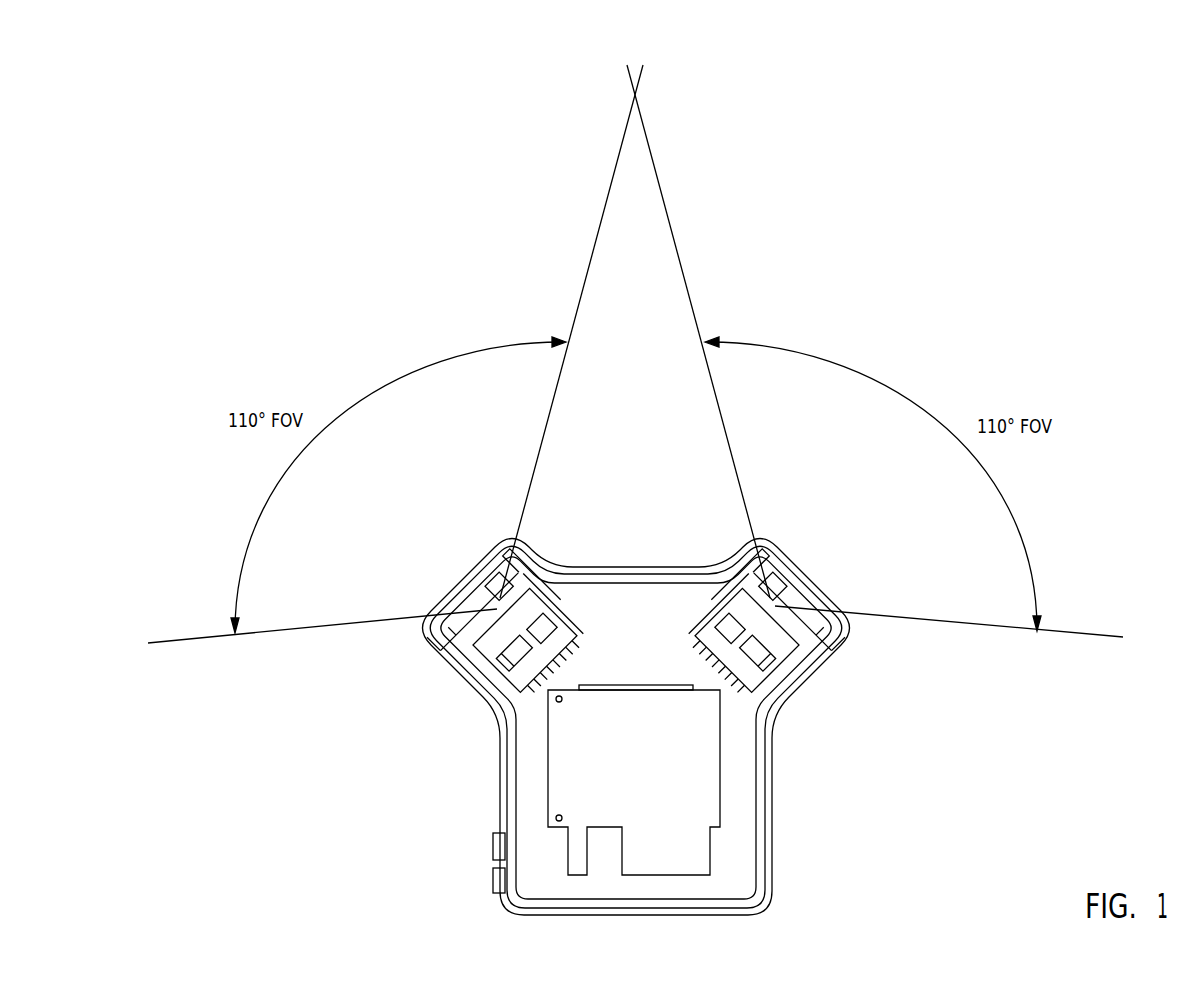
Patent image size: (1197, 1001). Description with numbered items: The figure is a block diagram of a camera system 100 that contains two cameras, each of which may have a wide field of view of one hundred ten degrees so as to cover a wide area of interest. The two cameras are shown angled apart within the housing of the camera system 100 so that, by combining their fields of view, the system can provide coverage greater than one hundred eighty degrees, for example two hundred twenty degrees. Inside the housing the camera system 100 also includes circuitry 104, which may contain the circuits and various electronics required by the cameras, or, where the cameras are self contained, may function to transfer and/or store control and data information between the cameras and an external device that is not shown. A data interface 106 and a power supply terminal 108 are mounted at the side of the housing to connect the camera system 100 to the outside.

The camera system 100 is at (296, 816).
The circuitry 104 is at (705, 786).
The data interface 106 is at (493, 875).
The power supply terminal 108 is at (493, 838).